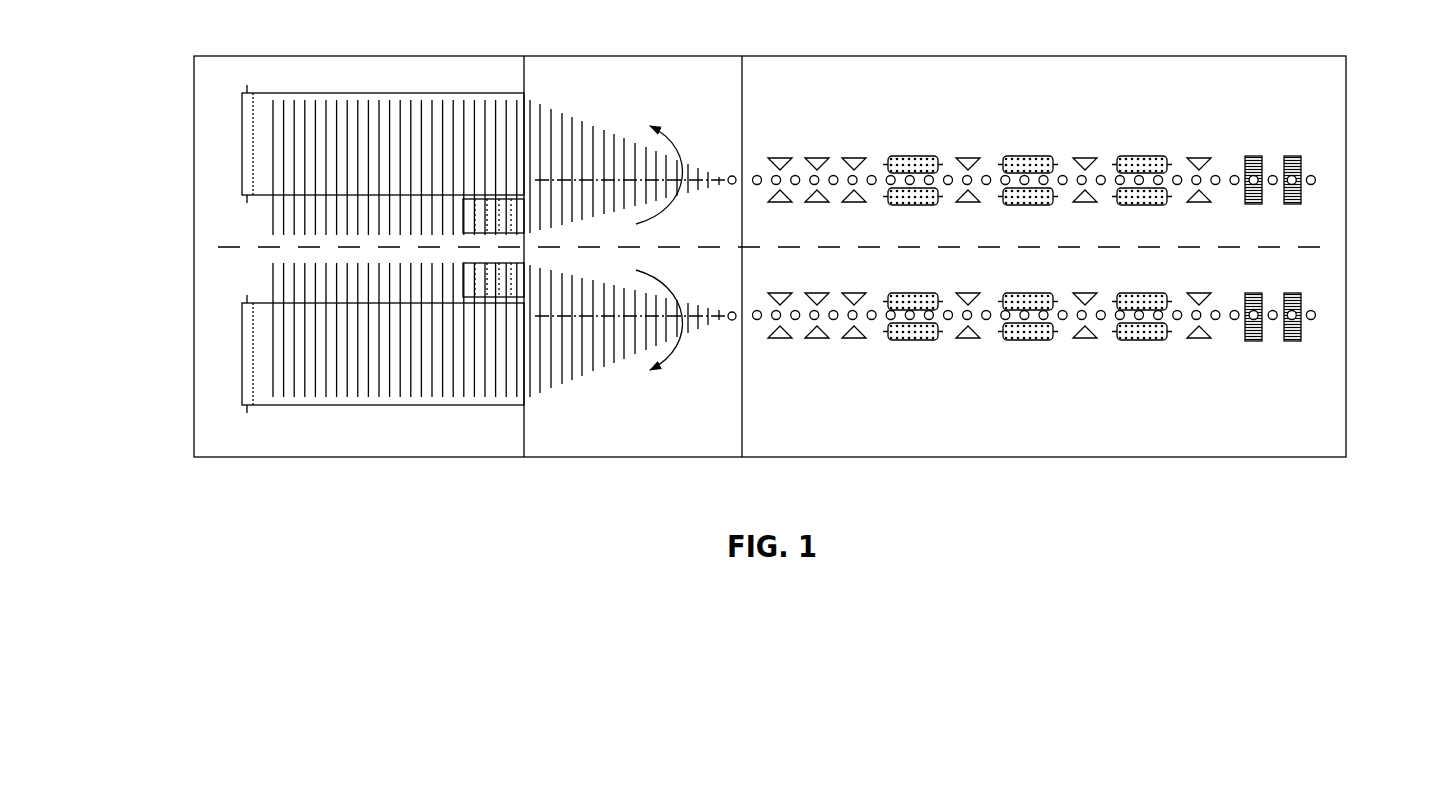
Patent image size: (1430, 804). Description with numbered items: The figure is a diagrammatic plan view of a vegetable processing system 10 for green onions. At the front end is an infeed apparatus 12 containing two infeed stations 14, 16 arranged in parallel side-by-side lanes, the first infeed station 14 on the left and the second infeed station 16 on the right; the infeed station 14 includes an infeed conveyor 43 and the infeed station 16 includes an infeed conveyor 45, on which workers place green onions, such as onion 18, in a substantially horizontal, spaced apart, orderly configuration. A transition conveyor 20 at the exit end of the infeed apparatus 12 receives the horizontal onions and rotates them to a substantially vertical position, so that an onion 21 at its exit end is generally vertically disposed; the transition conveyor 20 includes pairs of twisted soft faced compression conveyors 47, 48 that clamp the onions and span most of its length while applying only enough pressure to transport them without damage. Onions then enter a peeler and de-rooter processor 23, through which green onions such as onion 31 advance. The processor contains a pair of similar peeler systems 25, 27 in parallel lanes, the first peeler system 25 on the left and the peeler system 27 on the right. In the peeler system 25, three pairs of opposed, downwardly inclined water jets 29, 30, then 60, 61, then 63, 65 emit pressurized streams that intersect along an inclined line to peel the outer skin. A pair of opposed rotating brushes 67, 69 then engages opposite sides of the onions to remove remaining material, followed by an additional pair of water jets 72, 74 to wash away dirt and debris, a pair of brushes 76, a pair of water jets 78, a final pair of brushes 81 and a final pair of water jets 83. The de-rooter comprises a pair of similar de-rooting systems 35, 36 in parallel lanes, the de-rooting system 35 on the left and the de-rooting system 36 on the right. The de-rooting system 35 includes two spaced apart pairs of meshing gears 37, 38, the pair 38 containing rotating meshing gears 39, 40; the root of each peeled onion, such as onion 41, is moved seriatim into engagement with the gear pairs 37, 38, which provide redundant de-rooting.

The vegetable processing system 10 is at (423, 508).
The infeed apparatus 12 is at (266, 459).
The first infeed station 14 is at (214, 367).
The second infeed station 16 is at (210, 181).
The onion 18 is at (268, 280).
The transition conveyor 20 is at (607, 457).
The onion 21 is at (732, 323).
The peeler and de-rooter processor 23 is at (1038, 457).
The first peeler system 25 is at (908, 364).
The peeler system 27 is at (1036, 137).
The water jet 29 is at (780, 340).
The water jet 30 is at (782, 293).
The onion 31 is at (777, 316).
The de-rooting system 35 is at (1287, 356).
The de-rooting system 36 is at (1308, 84).
The gears 37 is at (1255, 284).
The gears 38 is at (1308, 266).
The meshing gear 39 is at (1283, 338).
The meshing gear 40 is at (1318, 312).
The onion 41 is at (1303, 330).
The infeed conveyor 43 is at (281, 409).
The infeed conveyor 45 is at (281, 85).
The twisted soft faced compression conveyor 47 is at (500, 265).
The twisted soft faced compression conveyor 48 is at (503, 233).
The water jet 60 is at (822, 340).
The water jet 61 is at (820, 292).
The water jet 63 is at (858, 339).
The water jet 65 is at (970, 298).
The rotating brush 67 is at (915, 343).
The rotating brush 69 is at (860, 292).
The water jet 72 is at (980, 335).
The water jet 74 is at (1078, 277).
The pair of brushes 76 is at (1058, 344).
The pair of water jets 78 is at (1093, 341).
The final pair of brushes 81 is at (1155, 284).
The final pair of water jets 83 is at (1189, 343).